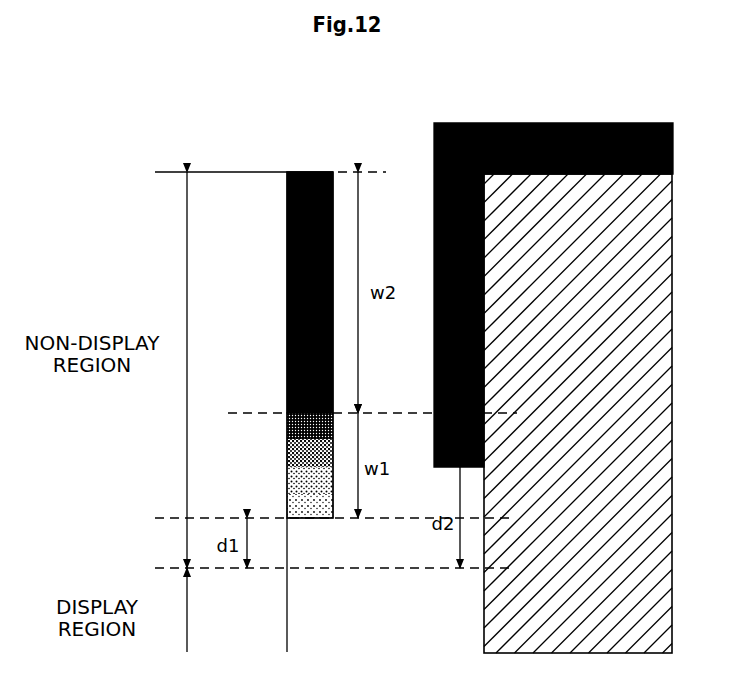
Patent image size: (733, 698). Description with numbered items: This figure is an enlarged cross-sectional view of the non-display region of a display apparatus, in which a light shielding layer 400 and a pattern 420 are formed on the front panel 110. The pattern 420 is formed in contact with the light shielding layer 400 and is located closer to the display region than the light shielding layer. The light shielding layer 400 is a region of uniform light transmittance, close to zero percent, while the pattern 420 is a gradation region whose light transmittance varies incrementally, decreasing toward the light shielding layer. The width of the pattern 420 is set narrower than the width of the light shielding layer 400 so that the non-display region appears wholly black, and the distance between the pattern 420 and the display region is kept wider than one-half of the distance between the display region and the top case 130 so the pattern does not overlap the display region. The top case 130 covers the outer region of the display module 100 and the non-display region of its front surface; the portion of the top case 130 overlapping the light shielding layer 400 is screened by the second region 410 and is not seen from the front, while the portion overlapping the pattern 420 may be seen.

The display module 100 is at (600, 123).
The front panel 110 is at (243, 183).
The top case 130 is at (538, 123).
The light shielding layer 400 is at (333, 169).
The second region 410 is at (287, 296).
The pattern 420 is at (287, 455).